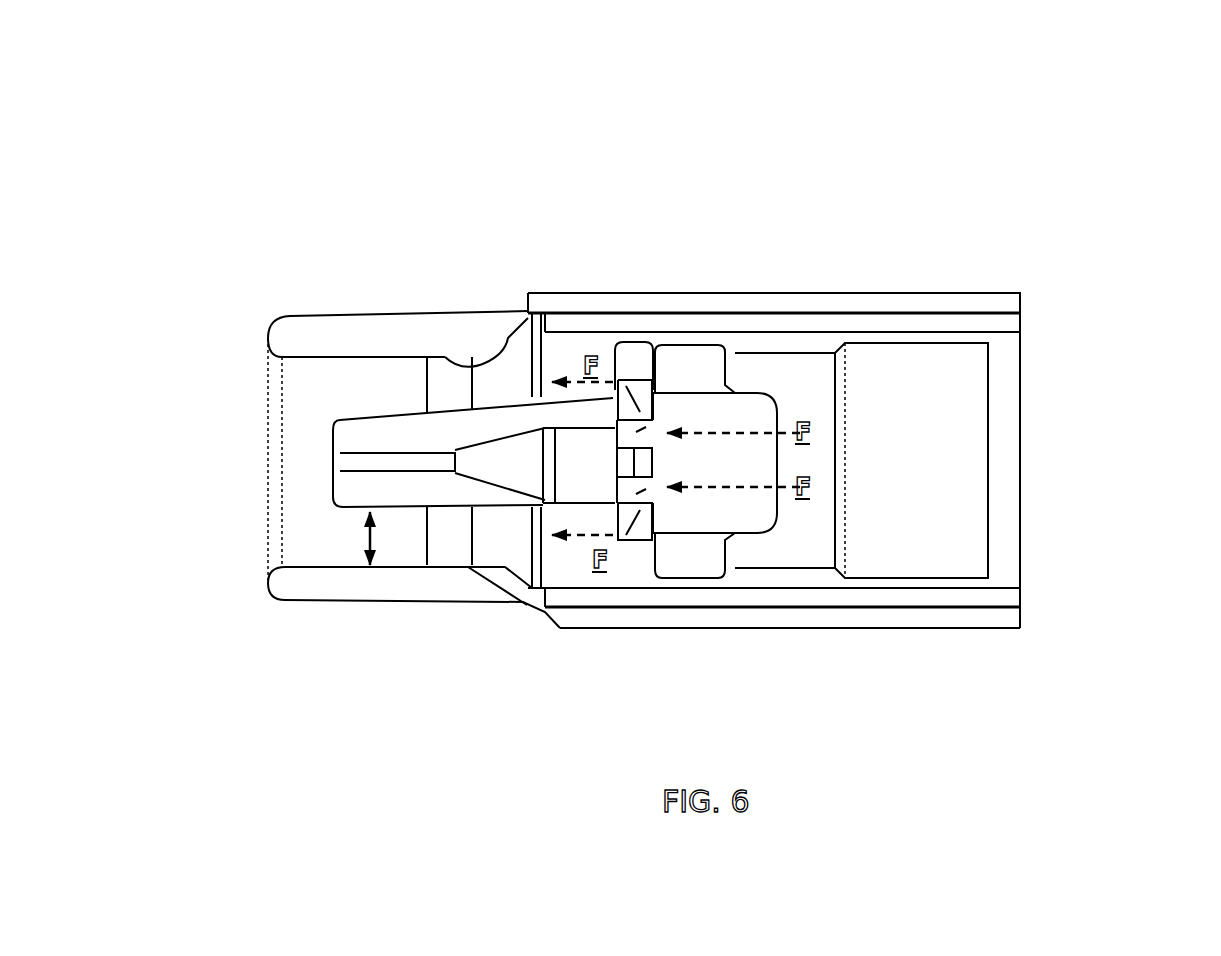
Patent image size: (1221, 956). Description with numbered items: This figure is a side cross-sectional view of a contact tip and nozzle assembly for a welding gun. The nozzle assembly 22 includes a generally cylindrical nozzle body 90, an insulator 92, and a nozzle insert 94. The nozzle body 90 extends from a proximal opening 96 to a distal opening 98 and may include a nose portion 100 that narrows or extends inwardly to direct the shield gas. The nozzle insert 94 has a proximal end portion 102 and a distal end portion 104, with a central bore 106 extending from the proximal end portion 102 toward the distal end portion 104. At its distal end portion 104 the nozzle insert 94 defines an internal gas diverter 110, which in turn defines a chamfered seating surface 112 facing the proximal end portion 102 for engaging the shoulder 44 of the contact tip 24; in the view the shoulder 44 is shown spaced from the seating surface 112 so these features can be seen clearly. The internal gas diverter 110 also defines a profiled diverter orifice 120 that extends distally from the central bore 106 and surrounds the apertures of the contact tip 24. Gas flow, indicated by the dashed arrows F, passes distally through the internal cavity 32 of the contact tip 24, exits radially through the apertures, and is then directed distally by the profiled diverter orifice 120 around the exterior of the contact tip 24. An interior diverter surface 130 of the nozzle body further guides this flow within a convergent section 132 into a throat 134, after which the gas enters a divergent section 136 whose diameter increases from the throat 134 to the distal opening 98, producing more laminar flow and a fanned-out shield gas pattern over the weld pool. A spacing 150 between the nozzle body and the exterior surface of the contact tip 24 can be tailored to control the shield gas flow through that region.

The nozzle assembly 22 is at (604, 254).
The contact tip 24 is at (513, 507).
The internal cavity 32 is at (762, 471).
The shoulder 44 is at (663, 530).
The nozzle body 90 is at (883, 297).
The insulator 92 is at (763, 595).
The nozzle insert 94 is at (960, 405).
The proximal opening 96 is at (971, 471).
The distal opening 98 is at (301, 471).
The nose portion 100 is at (323, 321).
The proximal end portion 102 is at (656, 596).
The distal end portion 104 is at (958, 564).
The central bore 106 is at (869, 471).
The internal gas diverter 110 is at (640, 380).
The seating surface 112 is at (652, 408).
The profiled diverter orifice 120 is at (587, 537).
The interior diverter surface 130 is at (452, 362).
The convergent section 132 is at (557, 349).
The throat 134 is at (434, 542).
The divergent section 136 is at (302, 379).
The spacing 150 is at (365, 530).